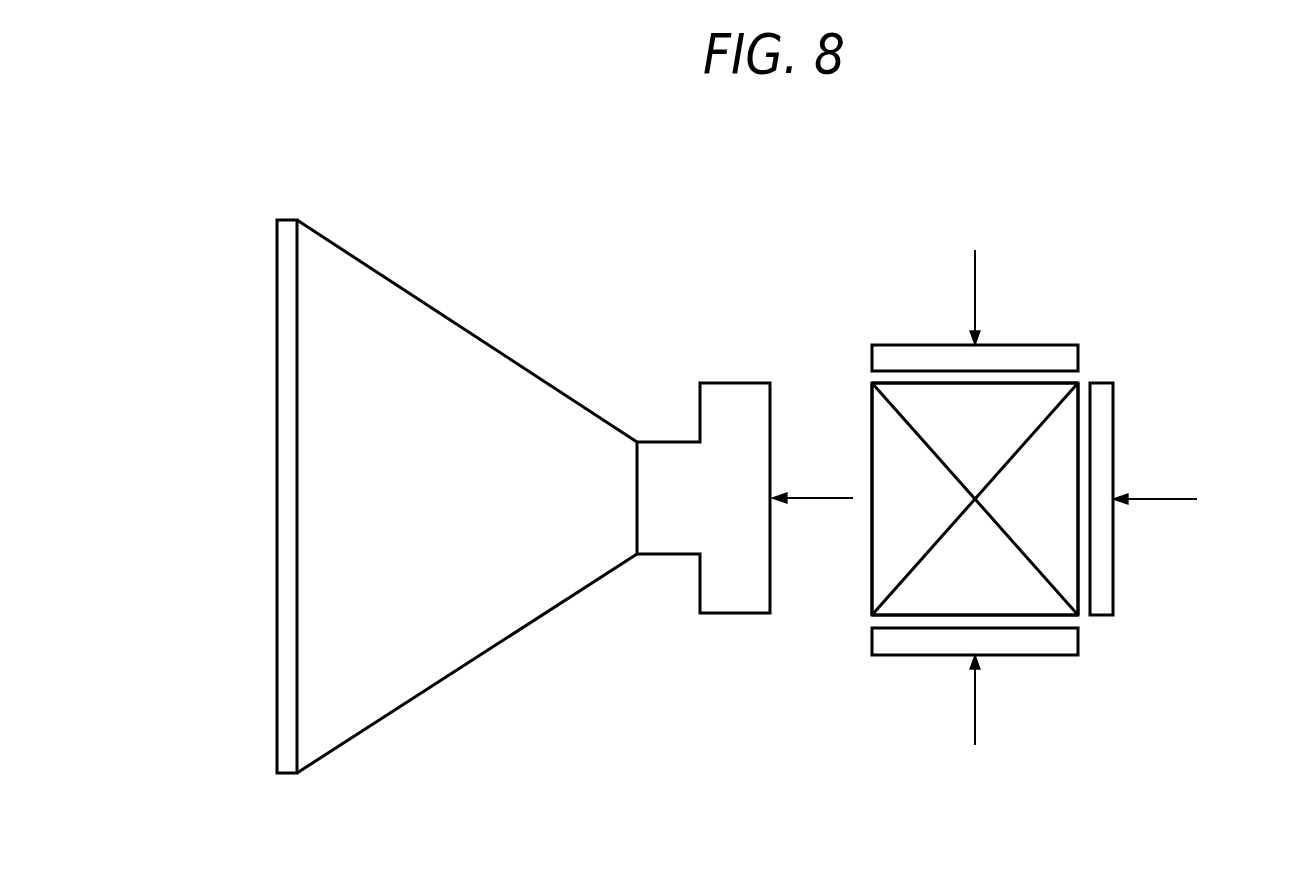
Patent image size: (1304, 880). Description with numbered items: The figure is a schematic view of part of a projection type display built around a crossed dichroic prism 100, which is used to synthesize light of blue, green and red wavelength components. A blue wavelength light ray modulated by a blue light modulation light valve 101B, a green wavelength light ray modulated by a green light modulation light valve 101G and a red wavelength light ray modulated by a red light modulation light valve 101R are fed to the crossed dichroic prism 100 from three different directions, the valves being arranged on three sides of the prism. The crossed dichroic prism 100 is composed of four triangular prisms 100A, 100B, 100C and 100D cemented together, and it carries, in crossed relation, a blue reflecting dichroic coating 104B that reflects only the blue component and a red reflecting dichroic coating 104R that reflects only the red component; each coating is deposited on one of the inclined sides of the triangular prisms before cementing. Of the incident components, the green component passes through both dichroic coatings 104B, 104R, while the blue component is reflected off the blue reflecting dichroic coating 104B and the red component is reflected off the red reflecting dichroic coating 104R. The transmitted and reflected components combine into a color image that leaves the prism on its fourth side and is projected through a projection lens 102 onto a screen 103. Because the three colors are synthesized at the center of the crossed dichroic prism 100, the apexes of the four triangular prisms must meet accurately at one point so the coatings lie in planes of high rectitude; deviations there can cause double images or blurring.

The crossed dichroic prism 100 is at (870, 563).
The triangular prism 100A is at (926, 592).
The triangular prism 100B is at (883, 443).
The triangular prism 100C is at (926, 402).
The triangular prism 100D is at (1060, 470).
The blue light modulation light valve 101B is at (1052, 345).
The red light modulation light valve 101R is at (1046, 648).
The green light modulation light valve 101G is at (1110, 595).
The projection lens 102 is at (724, 600).
The screen 103 is at (282, 460).
The blue reflecting dichroic coating 104B is at (1032, 440).
The red reflecting dichroic coating 104R is at (1045, 572).